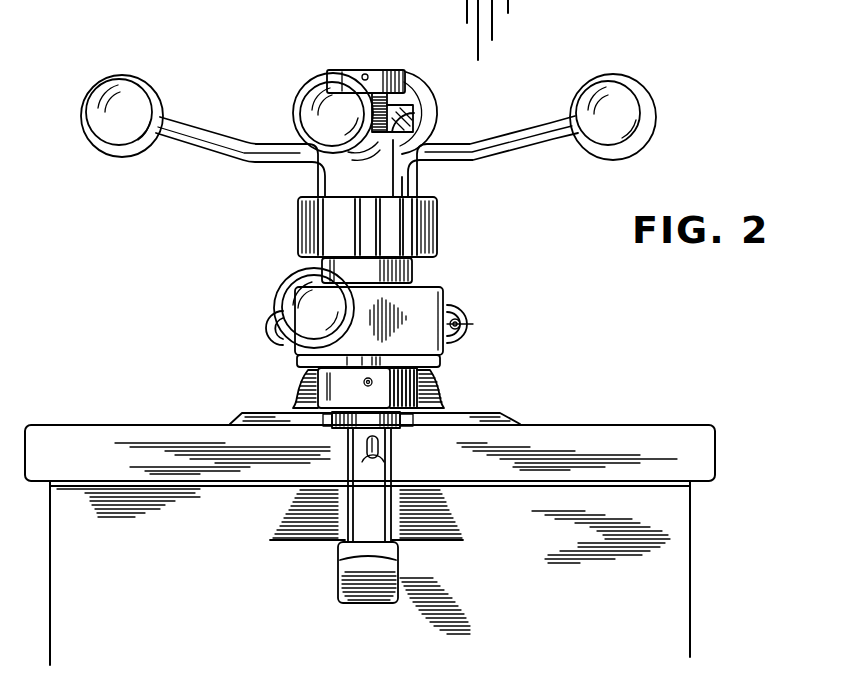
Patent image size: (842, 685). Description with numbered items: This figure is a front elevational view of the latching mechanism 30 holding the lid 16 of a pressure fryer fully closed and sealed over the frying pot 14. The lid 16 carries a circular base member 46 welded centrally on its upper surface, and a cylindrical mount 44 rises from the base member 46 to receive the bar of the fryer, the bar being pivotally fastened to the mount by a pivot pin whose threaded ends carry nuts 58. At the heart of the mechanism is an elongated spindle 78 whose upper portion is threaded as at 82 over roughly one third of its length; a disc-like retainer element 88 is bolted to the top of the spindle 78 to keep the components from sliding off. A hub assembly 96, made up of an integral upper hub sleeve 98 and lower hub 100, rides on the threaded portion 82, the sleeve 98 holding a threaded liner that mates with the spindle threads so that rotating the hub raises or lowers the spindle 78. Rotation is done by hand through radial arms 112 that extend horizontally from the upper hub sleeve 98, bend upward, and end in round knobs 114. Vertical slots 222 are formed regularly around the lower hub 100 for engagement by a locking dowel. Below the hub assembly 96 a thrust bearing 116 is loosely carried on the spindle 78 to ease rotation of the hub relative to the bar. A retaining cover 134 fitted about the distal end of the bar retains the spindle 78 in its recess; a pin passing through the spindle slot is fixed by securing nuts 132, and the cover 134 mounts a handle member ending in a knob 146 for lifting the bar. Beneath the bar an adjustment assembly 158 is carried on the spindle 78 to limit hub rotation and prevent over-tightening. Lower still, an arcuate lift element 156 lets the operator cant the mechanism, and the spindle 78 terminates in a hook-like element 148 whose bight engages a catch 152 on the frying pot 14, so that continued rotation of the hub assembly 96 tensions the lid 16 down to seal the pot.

The latching mechanism 30 is at (277, 80).
The round knob 114 is at (110, 103).
The retainer element 88 is at (380, 72).
The threaded portion 82 is at (387, 103).
The radial arm 112 is at (195, 140).
The upper hub sleeve 98 is at (335, 183).
The hub assembly 96 is at (432, 186).
The vertical slot 222 is at (363, 232).
The lower hub 100 is at (437, 227).
The thrust bearing 116 is at (413, 272).
The knob 146 is at (288, 288).
The nut 58 is at (272, 320).
The retaining cover 134 is at (420, 305).
The securing nut 132 is at (470, 333).
The adjustment assembly 158 is at (304, 381).
The cylindrical mount 44 is at (440, 388).
The circular base member 46 is at (497, 410).
The lid 16 is at (140, 435).
The lift element 156 is at (365, 442).
The spindle 78 is at (393, 465).
The frying pot 14 is at (573, 547).
The hook-like element 148 is at (352, 575).
The catch 152 is at (420, 540).